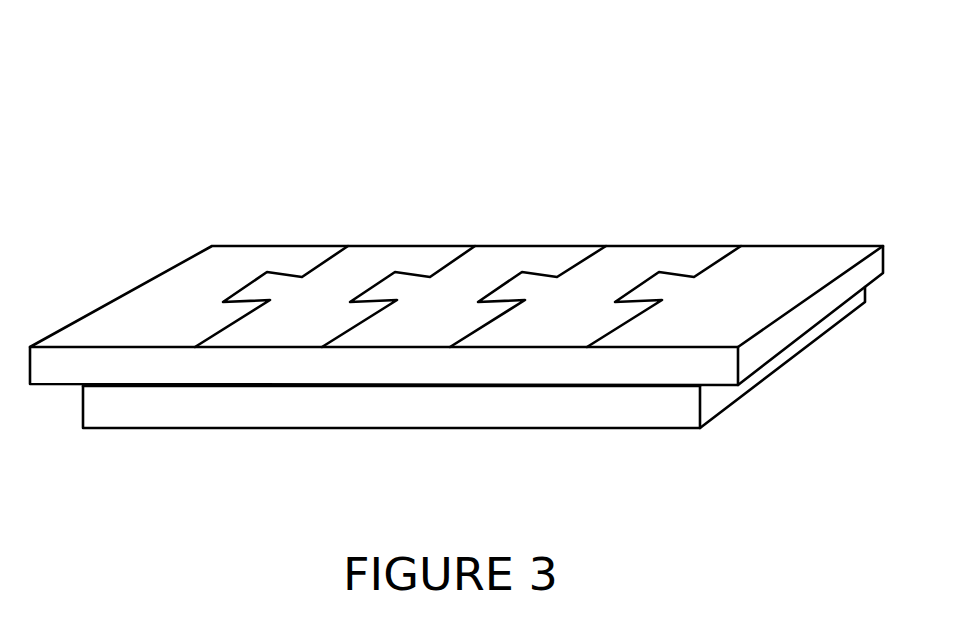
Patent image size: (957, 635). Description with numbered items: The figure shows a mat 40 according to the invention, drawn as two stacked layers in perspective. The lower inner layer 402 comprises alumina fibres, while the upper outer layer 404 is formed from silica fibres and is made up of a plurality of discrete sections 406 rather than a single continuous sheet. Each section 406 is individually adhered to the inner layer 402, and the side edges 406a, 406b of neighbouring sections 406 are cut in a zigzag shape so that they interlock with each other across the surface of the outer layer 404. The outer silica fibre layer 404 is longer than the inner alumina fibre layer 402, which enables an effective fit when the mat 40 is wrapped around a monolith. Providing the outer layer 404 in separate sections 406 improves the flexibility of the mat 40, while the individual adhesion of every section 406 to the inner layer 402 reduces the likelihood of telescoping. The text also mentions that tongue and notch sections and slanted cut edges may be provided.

The sensor assembly 40 is at (658, 155).
The inner layer 402 is at (532, 421).
The outer layer 404 is at (760, 258).
The discrete sections 406 is at (210, 321).
The side edge 406a is at (287, 274).
The side edge 406b is at (375, 285).